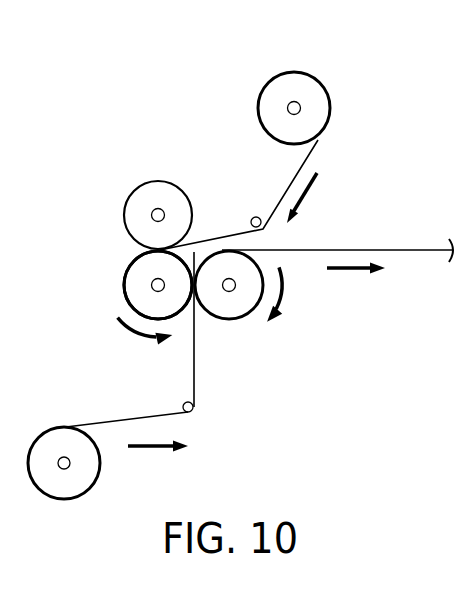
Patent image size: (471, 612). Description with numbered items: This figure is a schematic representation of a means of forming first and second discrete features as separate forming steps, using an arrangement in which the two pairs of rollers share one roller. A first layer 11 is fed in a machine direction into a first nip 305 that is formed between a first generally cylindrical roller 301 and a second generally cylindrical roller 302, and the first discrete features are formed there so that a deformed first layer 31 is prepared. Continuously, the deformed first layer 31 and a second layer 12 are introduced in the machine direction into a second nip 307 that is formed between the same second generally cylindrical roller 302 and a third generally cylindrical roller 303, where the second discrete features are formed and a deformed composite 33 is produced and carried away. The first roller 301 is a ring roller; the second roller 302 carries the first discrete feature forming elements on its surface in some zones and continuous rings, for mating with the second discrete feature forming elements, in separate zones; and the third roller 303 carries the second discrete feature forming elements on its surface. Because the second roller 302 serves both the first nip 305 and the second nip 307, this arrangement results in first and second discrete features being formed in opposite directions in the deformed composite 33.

The first layer 11 is at (294, 72).
The second layer 12 is at (63, 500).
The deformed first layer 31 is at (131, 258).
The deformed composite 33 is at (355, 249).
The first generally cylindrical roller 301 is at (158, 181).
The second generally cylindrical roller 302 is at (132, 284).
The third generally cylindrical roller 303 is at (234, 321).
The first nip 305 is at (199, 235).
The second nip 307 is at (203, 318).